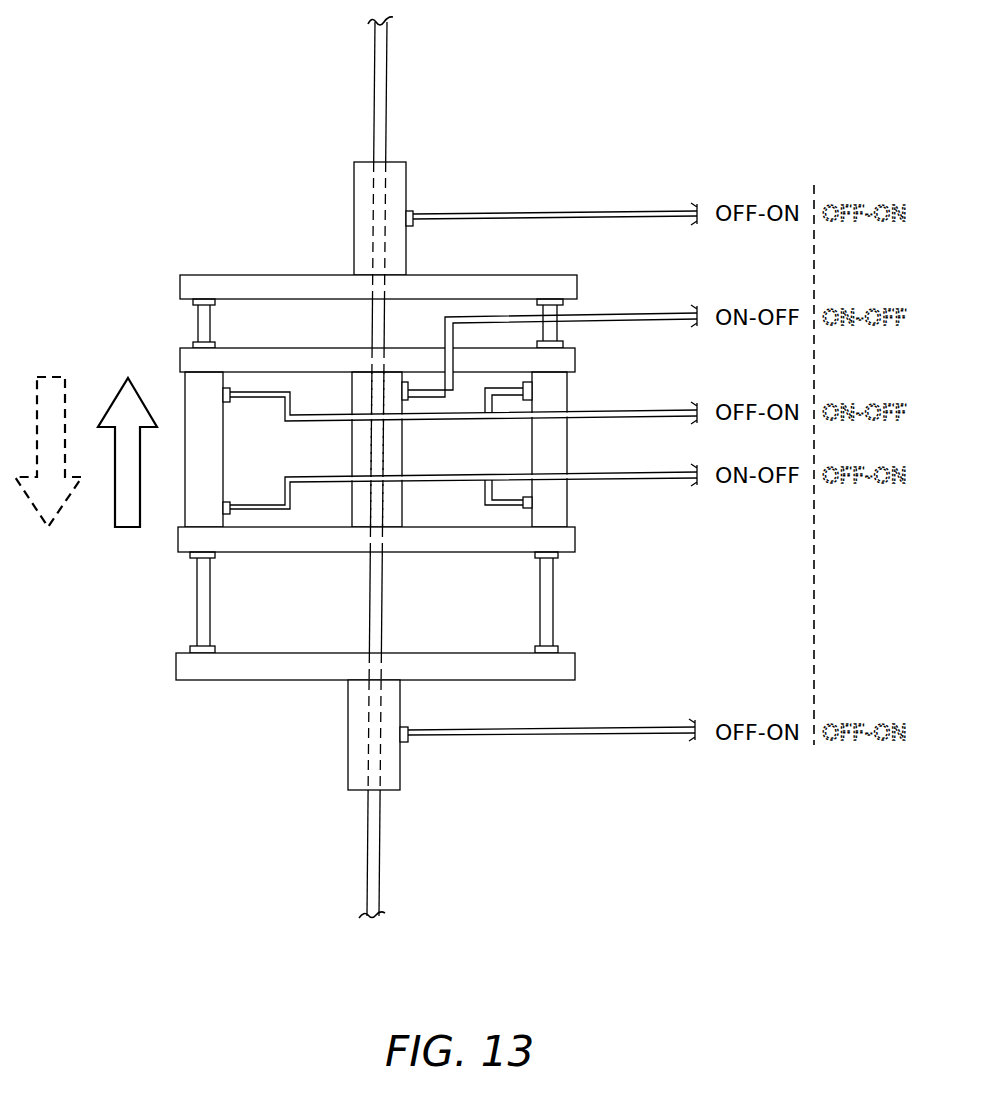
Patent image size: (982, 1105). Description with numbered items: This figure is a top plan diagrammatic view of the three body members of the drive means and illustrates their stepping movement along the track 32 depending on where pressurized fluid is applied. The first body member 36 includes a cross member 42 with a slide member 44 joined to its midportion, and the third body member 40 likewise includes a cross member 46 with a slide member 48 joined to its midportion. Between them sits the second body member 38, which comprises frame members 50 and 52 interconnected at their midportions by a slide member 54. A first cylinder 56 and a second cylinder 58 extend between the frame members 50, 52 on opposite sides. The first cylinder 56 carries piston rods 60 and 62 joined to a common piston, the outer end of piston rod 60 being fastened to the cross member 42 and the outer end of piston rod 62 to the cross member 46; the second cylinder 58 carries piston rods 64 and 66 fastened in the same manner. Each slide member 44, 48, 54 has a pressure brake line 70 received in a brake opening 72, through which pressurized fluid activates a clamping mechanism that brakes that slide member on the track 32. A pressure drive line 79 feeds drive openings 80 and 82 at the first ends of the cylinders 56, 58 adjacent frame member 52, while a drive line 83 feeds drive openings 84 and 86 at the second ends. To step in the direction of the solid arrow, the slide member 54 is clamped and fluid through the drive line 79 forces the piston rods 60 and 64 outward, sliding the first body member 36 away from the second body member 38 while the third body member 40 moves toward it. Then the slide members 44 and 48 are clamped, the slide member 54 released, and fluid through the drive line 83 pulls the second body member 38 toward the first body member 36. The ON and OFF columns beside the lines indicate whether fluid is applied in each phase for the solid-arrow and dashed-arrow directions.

The track 32 is at (387, 60).
The first body member 36 is at (367, 244).
The second body member 38 is at (312, 338).
The third body member 40 is at (343, 696).
The cross member 42 is at (480, 290).
The slide member 44 is at (370, 190).
The cross member 46 is at (475, 672).
The slide member 48 is at (352, 758).
The frame member 50 is at (332, 357).
The frame member 52 is at (347, 543).
The slide member 54 is at (355, 447).
The first cylinder 56 is at (196, 498).
The second cylinder 58 is at (567, 500).
The piston rod 60 is at (198, 318).
The piston rod 62 is at (197, 612).
The piston rod 64 is at (553, 310).
The piston rod 66 is at (553, 607).
The pressure brake line 70 is at (563, 215).
The brake opening 72 is at (415, 212).
The pressure drive line 79 is at (662, 482).
The drive opening 80 is at (230, 511).
The drive opening 82 is at (525, 507).
The drive line 83 is at (658, 411).
The drive opening 84 is at (231, 393).
The drive opening 86 is at (530, 404).